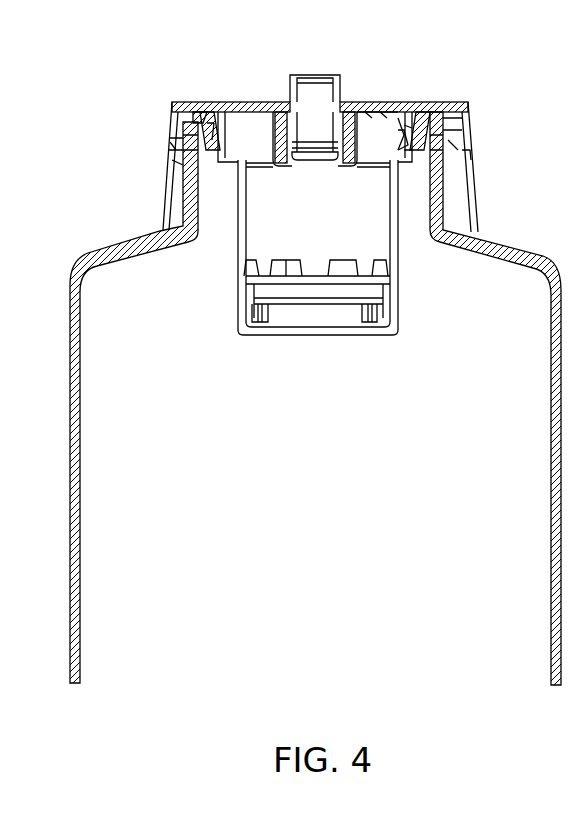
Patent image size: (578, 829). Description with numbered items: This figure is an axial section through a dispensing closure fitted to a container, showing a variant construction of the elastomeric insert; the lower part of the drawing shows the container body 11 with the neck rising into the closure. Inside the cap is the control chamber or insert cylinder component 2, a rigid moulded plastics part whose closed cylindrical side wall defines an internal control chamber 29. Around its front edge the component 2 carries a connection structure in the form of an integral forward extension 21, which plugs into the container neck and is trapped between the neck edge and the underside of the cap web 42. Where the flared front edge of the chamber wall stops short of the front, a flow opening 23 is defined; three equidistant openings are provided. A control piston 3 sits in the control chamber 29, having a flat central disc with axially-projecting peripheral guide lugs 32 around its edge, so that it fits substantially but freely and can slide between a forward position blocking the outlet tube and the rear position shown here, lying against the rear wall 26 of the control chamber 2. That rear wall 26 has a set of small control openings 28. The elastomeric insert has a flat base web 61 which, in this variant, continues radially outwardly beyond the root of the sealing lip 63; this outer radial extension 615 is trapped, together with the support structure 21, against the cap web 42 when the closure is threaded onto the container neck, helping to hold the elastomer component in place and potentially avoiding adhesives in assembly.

The control chamber or insert cylinder component 2 is at (322, 216).
The control piston 3 is at (340, 290).
The bottle body 11 is at (319, 561).
The integral forward extension 21 is at (463, 130).
The flow opening 23 is at (205, 138).
The rear wall 26 is at (322, 305).
The control openings 28 is at (367, 320).
The control chamber 29 is at (301, 214).
The peripheral guide lugs 32 is at (341, 262).
The cap web 42 is at (215, 108).
The flat base web 61 is at (365, 107).
The sealing lip 63 is at (397, 135).
The outer radial extension 615 is at (400, 125).